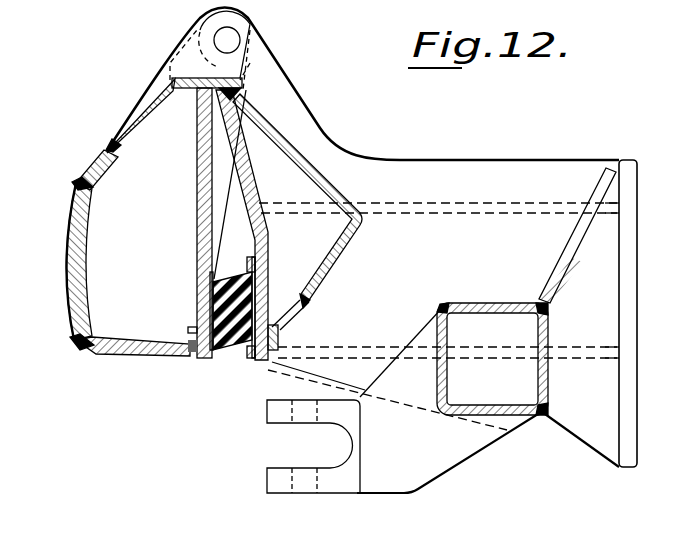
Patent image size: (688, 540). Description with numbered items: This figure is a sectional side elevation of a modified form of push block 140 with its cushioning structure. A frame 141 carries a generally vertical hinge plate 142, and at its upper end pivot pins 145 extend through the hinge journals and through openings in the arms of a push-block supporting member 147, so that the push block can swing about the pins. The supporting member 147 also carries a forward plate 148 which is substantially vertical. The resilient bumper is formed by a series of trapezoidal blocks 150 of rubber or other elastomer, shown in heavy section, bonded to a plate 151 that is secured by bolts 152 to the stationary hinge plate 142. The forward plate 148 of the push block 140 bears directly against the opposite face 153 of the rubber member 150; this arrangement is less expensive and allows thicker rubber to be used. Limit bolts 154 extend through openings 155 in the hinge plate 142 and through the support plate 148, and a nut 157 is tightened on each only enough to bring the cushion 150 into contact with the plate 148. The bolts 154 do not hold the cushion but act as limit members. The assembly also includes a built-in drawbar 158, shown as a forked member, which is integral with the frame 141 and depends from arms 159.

The push block 140 is at (62, 236).
The frame 141 is at (427, 163).
The hinge plate 142 is at (262, 257).
The pivot pins 145 is at (232, 33).
The push-block supporting member 147 is at (251, 45).
The forward plate 148 is at (197, 246).
The trapezoidal blocks 150 is at (229, 342).
The plate 151 is at (255, 298).
The bolts 152 is at (251, 257).
The opposite face 153 is at (210, 305).
The limit bolts 154 is at (282, 338).
The openings 155 is at (270, 366).
The nut 157 is at (188, 352).
The drawbar 158 is at (331, 484).
The arms 159 is at (463, 455).